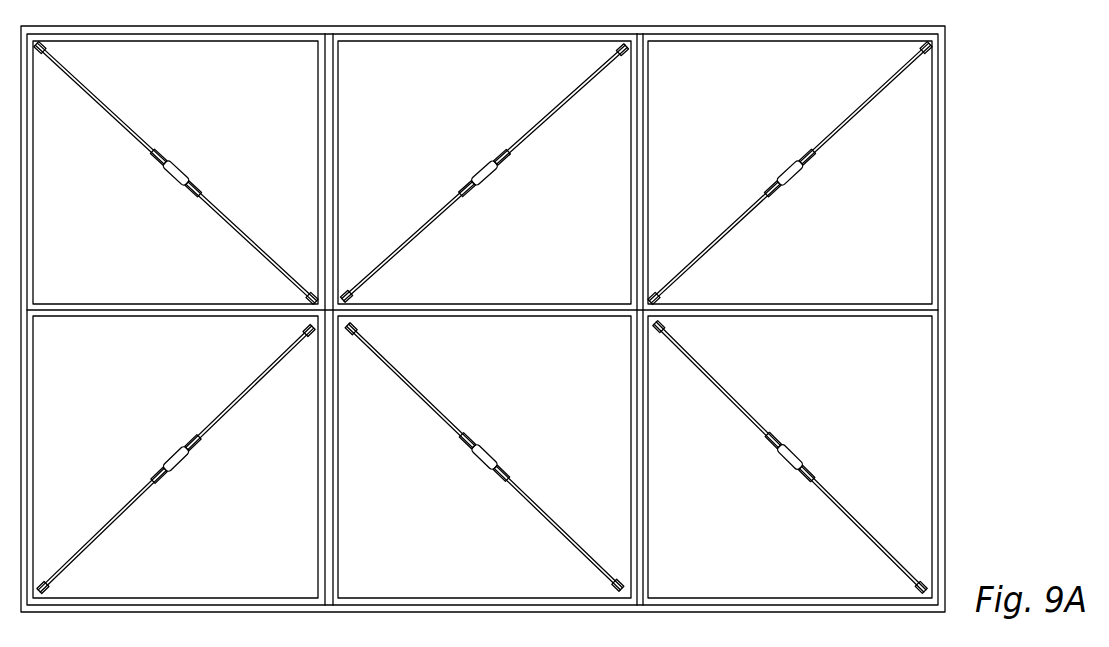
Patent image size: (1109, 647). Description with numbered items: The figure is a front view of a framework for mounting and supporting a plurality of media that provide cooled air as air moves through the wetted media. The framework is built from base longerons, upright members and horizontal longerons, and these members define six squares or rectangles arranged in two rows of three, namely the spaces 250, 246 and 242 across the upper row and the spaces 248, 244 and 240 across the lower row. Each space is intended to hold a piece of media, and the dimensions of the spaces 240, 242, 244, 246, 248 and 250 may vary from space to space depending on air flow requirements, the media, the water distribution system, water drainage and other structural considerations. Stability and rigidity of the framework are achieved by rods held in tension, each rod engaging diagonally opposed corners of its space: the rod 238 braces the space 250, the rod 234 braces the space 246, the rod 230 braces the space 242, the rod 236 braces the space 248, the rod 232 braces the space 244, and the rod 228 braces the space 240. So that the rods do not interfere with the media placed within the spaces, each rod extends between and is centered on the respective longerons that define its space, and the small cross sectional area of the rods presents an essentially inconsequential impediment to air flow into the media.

The space 250 is at (267, 82).
The space 246 is at (457, 78).
The space 242 is at (769, 80).
The space 248 is at (163, 426).
The space 244 is at (477, 497).
The space 240 is at (758, 496).
The rod 238 is at (218, 214).
The rod 234 is at (434, 222).
The rod 230 is at (769, 202).
The rod 236 is at (245, 400).
The rod 232 is at (522, 489).
The rod 228 is at (748, 405).